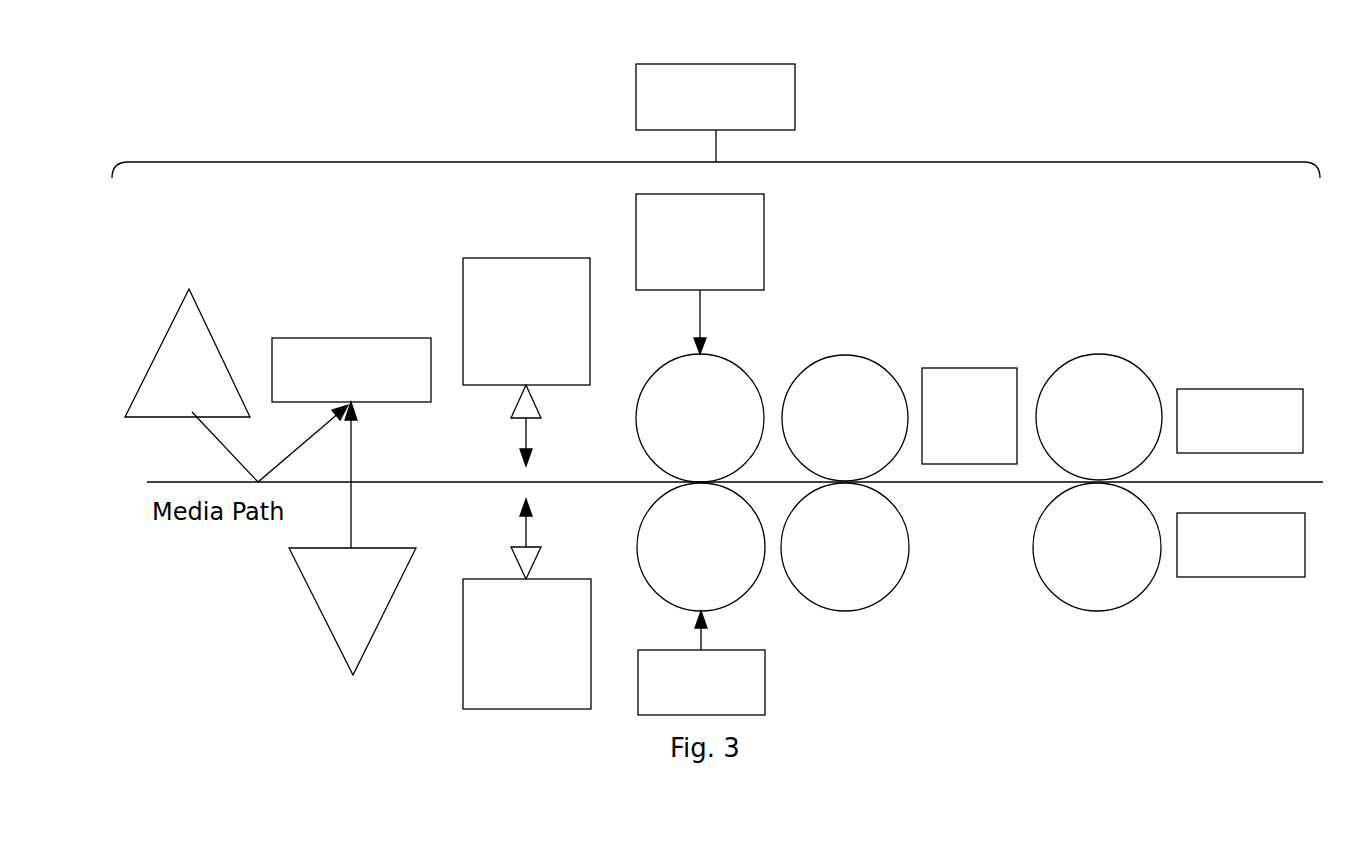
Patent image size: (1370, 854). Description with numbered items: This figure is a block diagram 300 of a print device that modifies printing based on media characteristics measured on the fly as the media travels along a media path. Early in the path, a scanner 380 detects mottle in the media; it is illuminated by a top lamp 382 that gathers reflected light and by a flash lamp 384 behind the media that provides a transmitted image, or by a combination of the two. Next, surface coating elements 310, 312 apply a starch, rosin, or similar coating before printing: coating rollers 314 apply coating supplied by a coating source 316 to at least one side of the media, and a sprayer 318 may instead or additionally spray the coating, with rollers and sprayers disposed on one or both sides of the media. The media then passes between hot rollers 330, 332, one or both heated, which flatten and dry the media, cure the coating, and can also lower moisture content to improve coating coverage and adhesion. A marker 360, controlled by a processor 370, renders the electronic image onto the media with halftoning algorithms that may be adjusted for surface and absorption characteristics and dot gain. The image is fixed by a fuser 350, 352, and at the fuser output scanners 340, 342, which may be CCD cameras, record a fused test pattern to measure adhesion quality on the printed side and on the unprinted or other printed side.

The block diagram 300 is at (262, 104).
The surface coating element 310 is at (810, 275).
The surface coating element 312 is at (463, 305).
The coating roller 314 is at (733, 368).
The coating source 316 is at (636, 258).
The sprayer 318 is at (543, 388).
The hot roller 330 is at (868, 353).
The hot roller 332 is at (892, 602).
The scanner 340 is at (1190, 389).
The scanner 342 is at (1193, 577).
The fuser 350 is at (1100, 352).
The fuser 352 is at (1097, 606).
The marker 360 is at (965, 368).
The processor 370 is at (636, 112).
The scanner 380 is at (320, 338).
The top lamp 382 is at (218, 340).
The flash lamp 384 is at (318, 612).